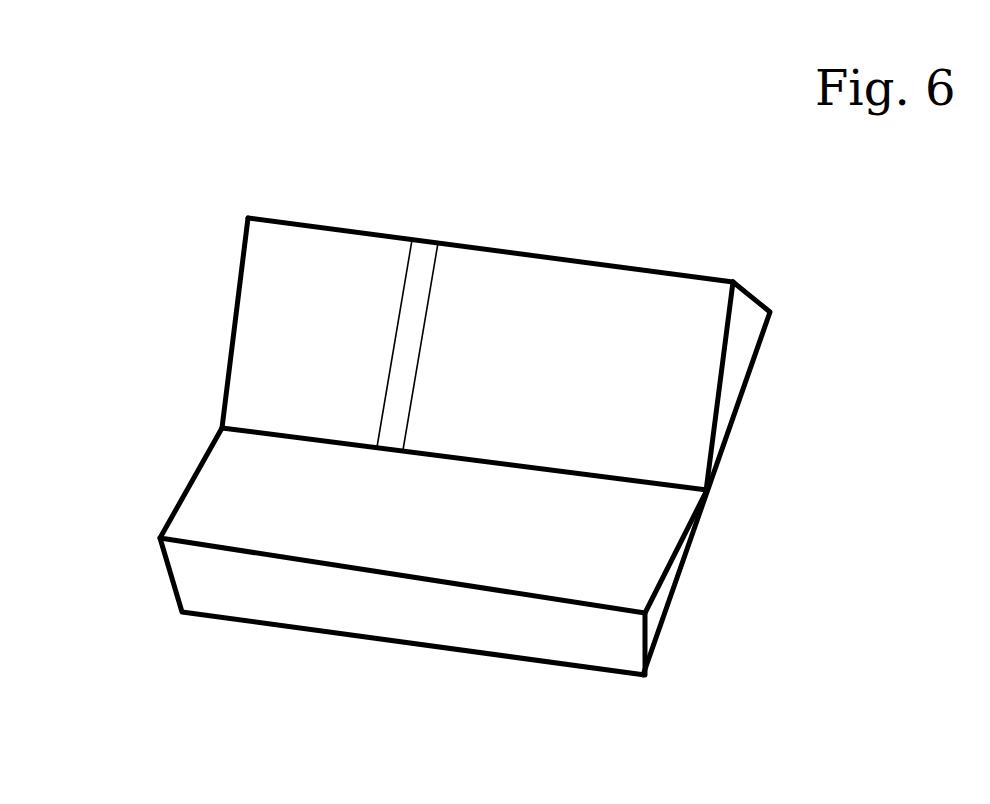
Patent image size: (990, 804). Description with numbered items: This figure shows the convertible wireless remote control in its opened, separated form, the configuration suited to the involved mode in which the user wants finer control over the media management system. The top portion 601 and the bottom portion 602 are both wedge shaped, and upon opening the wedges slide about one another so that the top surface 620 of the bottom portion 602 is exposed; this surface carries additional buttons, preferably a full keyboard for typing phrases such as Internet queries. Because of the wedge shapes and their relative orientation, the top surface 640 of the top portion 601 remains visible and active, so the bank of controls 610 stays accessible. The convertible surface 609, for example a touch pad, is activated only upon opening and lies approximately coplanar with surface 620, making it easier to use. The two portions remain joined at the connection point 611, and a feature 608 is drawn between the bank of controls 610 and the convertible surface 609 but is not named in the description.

The top portion 601 is at (745, 313).
The bottom portion 602 is at (333, 610).
The fold / hinge region of display 608 is at (413, 287).
The convertible surface 609 is at (636, 386).
The bank of controls 610 is at (271, 323).
The hinge 611 is at (712, 495).
The top surface of the bottom portion 620 is at (433, 520).
The top surface of the top portion 640 is at (490, 225).